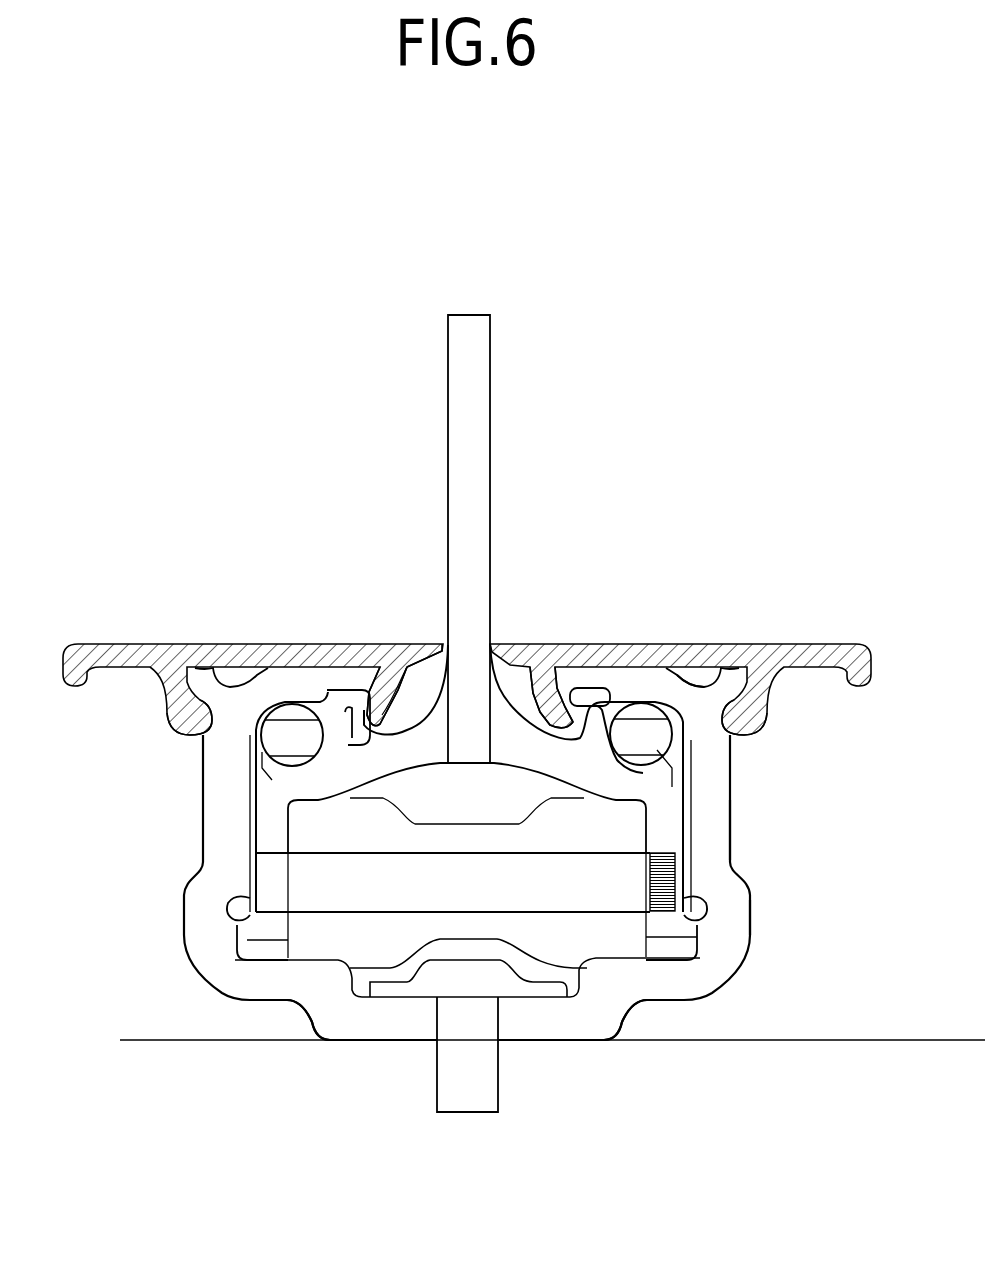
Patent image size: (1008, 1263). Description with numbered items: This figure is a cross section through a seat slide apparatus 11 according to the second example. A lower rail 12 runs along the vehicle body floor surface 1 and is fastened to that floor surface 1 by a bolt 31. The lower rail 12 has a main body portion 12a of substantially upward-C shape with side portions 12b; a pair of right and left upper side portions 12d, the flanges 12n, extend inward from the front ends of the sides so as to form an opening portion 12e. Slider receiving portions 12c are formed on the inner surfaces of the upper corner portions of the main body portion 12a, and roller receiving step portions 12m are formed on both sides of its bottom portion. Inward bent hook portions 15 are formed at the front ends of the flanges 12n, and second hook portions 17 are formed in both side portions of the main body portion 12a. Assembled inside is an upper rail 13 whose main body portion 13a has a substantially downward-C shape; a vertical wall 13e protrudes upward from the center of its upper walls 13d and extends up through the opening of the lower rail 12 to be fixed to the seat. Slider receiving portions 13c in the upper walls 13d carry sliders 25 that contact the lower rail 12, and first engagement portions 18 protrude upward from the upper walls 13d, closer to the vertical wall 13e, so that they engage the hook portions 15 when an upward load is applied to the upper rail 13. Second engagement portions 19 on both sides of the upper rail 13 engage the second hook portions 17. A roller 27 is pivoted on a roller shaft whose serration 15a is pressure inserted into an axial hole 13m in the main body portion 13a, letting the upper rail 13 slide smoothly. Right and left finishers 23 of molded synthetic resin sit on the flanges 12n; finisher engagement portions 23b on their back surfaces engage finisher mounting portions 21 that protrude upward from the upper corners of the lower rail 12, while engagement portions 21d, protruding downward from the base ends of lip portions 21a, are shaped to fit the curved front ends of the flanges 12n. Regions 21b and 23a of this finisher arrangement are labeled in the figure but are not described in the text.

The vehicle body floor surface 1 is at (850, 1040).
The seat slide apparatus 11 is at (222, 500).
The lower rail 12 is at (190, 890).
The main body portion 12a is at (715, 830).
The side portion 12b is at (752, 957).
The slider receiving portion 12c is at (712, 680).
The upper side portion 12d is at (287, 647).
The opening portion 12e is at (507, 683).
The roller receiving step portion 12m is at (232, 1020).
The flange 12n is at (680, 647).
The upper rail 13 is at (268, 815).
The main body portion 13a is at (700, 797).
The slider receiving portion 13c is at (262, 770).
The upper wall 13d is at (427, 745).
The vertical wall 13e is at (492, 352).
The axial hole 13m is at (250, 868).
The hook portion 15 is at (374, 700).
The serration 15a is at (700, 925).
The second hook portion 17 is at (230, 897).
The first engagement portion 18 is at (335, 690).
The second engagement portion 19 is at (235, 935).
The finisher mounting portion 21 is at (192, 647).
The lip portion 21a is at (430, 647).
The upper plate foot 21b is at (190, 718).
The engagement portion 21d is at (387, 647).
The finisher 23 is at (230, 647).
The second plate arm 23a is at (533, 647).
The finisher engagement portion 23b is at (770, 712).
The slider 25 is at (613, 705).
The roller 27 is at (645, 880).
The bolt 31 is at (499, 1067).